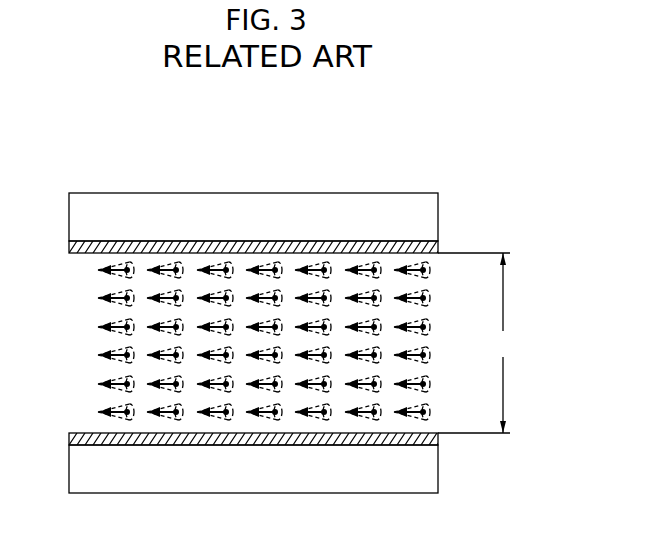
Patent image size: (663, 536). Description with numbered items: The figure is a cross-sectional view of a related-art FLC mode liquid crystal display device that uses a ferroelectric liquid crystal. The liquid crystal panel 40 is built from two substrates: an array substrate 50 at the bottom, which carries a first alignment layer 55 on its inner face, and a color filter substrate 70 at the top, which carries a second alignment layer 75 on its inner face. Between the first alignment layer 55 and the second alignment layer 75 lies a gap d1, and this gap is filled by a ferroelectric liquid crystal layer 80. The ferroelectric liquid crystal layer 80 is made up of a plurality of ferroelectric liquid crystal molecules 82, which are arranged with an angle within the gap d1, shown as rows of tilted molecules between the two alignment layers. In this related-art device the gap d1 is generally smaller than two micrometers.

The liquid crystal panel 40 is at (420, 182).
The color filter substrate 70 is at (425, 229).
The second alignment layer 75 is at (438, 246).
The ferroelectric liquid crystal layer 80 is at (63, 254).
The ferroelectric liquid crystal molecules 82 is at (426, 299).
The first alignment layer 55 is at (438, 437).
The array substrate 50 is at (425, 478).
The gap d1 is at (476, 343).